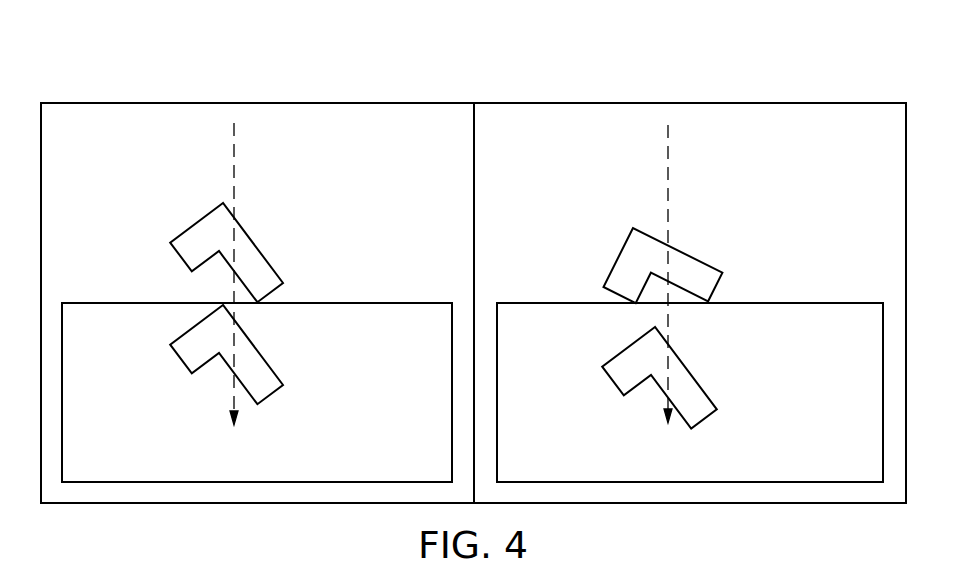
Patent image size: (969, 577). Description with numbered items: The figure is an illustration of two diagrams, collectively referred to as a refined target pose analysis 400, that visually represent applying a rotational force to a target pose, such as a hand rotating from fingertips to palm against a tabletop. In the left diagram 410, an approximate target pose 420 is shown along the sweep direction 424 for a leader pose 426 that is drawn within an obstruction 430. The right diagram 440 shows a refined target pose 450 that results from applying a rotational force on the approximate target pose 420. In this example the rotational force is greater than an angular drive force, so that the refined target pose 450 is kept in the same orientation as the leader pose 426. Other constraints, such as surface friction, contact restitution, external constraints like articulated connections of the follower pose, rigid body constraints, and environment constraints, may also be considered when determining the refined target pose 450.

The refined target pose analysis 400 is at (323, 73).
The diagram 410 is at (122, 178).
The approximate target pose 420 is at (197, 223).
The sweep direction 424 is at (232, 162).
The leader pose 426 is at (177, 362).
The obstruction 430 is at (123, 303).
The diagram 440 is at (555, 178).
The refined target pose 450 is at (717, 240).